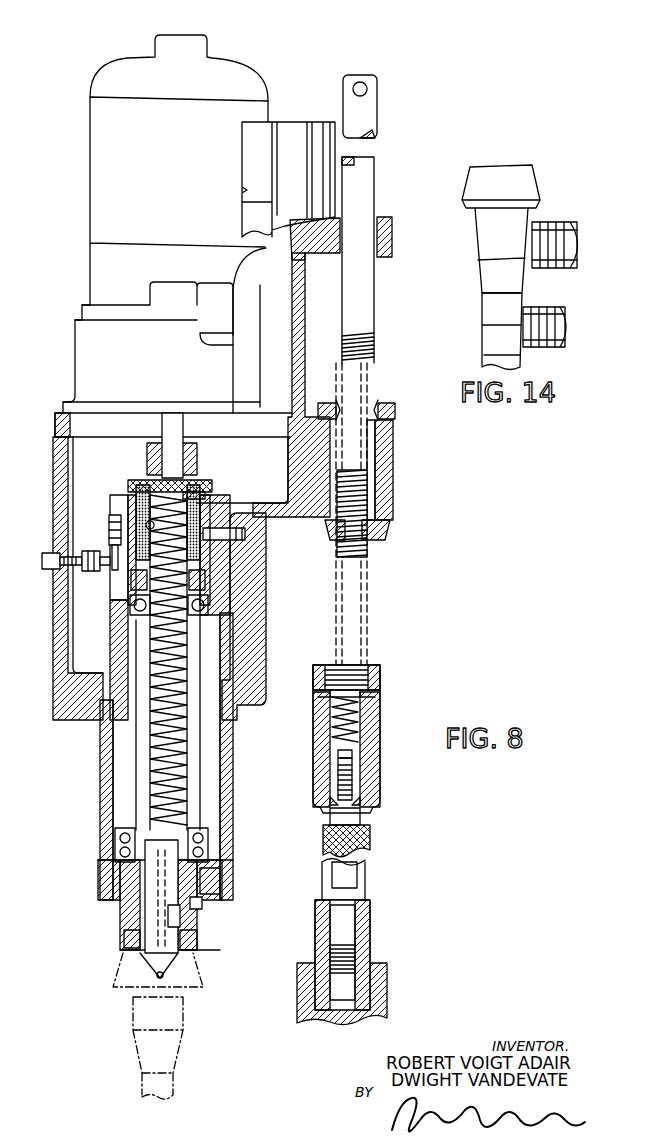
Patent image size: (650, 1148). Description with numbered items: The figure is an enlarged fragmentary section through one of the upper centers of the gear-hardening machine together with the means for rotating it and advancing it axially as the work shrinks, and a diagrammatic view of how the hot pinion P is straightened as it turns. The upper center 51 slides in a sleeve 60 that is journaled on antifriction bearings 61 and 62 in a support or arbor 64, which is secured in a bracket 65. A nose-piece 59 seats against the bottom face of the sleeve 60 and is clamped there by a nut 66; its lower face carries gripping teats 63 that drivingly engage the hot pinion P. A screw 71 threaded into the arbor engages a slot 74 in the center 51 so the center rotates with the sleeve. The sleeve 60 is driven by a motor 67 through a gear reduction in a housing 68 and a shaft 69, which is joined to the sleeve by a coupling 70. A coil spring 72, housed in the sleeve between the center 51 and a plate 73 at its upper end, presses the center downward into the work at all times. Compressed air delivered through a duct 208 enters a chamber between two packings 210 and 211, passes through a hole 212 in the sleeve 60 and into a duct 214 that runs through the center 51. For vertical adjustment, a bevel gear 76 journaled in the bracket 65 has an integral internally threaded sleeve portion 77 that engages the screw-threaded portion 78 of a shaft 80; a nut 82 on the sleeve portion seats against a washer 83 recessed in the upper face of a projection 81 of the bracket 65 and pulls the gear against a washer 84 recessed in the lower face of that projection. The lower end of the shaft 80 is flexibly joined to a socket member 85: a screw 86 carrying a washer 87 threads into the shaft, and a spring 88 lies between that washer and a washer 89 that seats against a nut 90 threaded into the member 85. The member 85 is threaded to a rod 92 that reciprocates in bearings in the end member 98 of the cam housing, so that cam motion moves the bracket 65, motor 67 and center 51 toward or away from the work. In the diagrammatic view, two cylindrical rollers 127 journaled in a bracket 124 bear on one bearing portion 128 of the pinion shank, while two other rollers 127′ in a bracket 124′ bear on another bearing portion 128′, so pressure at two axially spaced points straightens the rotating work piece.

In FIG. 8, the motor 67 is at (97, 160).
In FIG. 8, the housing 68 is at (77, 368).
In FIG. 8, the shaft 69 is at (170, 432).
In FIG. 8, the coupling 70 is at (197, 457).
In FIG. 8, the plate 73 is at (148, 491).
In FIG. 8, the packing 210 is at (192, 495).
In FIG. 8, the hole 212 is at (140, 508).
In FIG. 8, the duct 208 is at (234, 534).
In FIG. 8, the packing 211 is at (210, 548).
In FIG. 8, the antifriction bearing 62 is at (137, 597).
In FIG. 8, the bracket 65 is at (262, 655).
In FIG. 8, the support or arbor 64 is at (105, 745).
In FIG. 8, the coil spring 72 is at (168, 778).
In FIG. 8, the antifriction bearing 61 is at (108, 845).
In FIG. 8, the sleeve 60 is at (130, 902).
In FIG. 8, the upper center 51 is at (150, 927).
In FIG. 8, the nose-piece 59 is at (130, 938).
In FIG. 8, the slot 74 is at (213, 882).
In FIG. 8, the screw 71 is at (200, 903).
In FIG. 8, the duct 214 is at (177, 933).
In FIG. 8, the nut 66 is at (197, 937).
In FIG. 8, the gripping teats 63 is at (187, 955).
In FIG. 8, the pinion P is at (173, 1015).
In FIG. 8, the shaft 80 is at (365, 312).
In FIG. 8, the nut 82 is at (377, 403).
In FIG. 8, the washer 83 is at (387, 417).
In FIG. 8, the projection 81 is at (385, 464).
In FIG. 8, the sleeve portion 77 is at (373, 496).
In FIG. 8, the washer 84 is at (385, 525).
In FIG. 8, the bevel gear 76 is at (387, 536).
In FIG. 8, the screw-threaded portion 78 is at (338, 548).
In FIG. 8, the nut 90 is at (367, 667).
In FIG. 8, the washer 89 is at (370, 693).
In FIG. 8, the spring 88 is at (327, 731).
In FIG. 8, the socket member 85 is at (377, 765).
In FIG. 8, the washer 87 is at (323, 800).
In FIG. 8, the screw 86 is at (342, 812).
In FIG. 8, the rod 92 is at (367, 947).
In FIG. 8, the end member 98 is at (383, 993).
In FIG. 14, the cylindrical rollers 127 is at (547, 232).
In FIG. 14, the bearing portion 128 is at (510, 250).
In FIG. 14, the bracket 124 is at (553, 263).
In FIG. 14, the bearing portion 128′ is at (485, 320).
In FIG. 14, the cylindrical rollers 127′ is at (557, 322).
In FIG. 14, the bracket 124′ is at (552, 343).